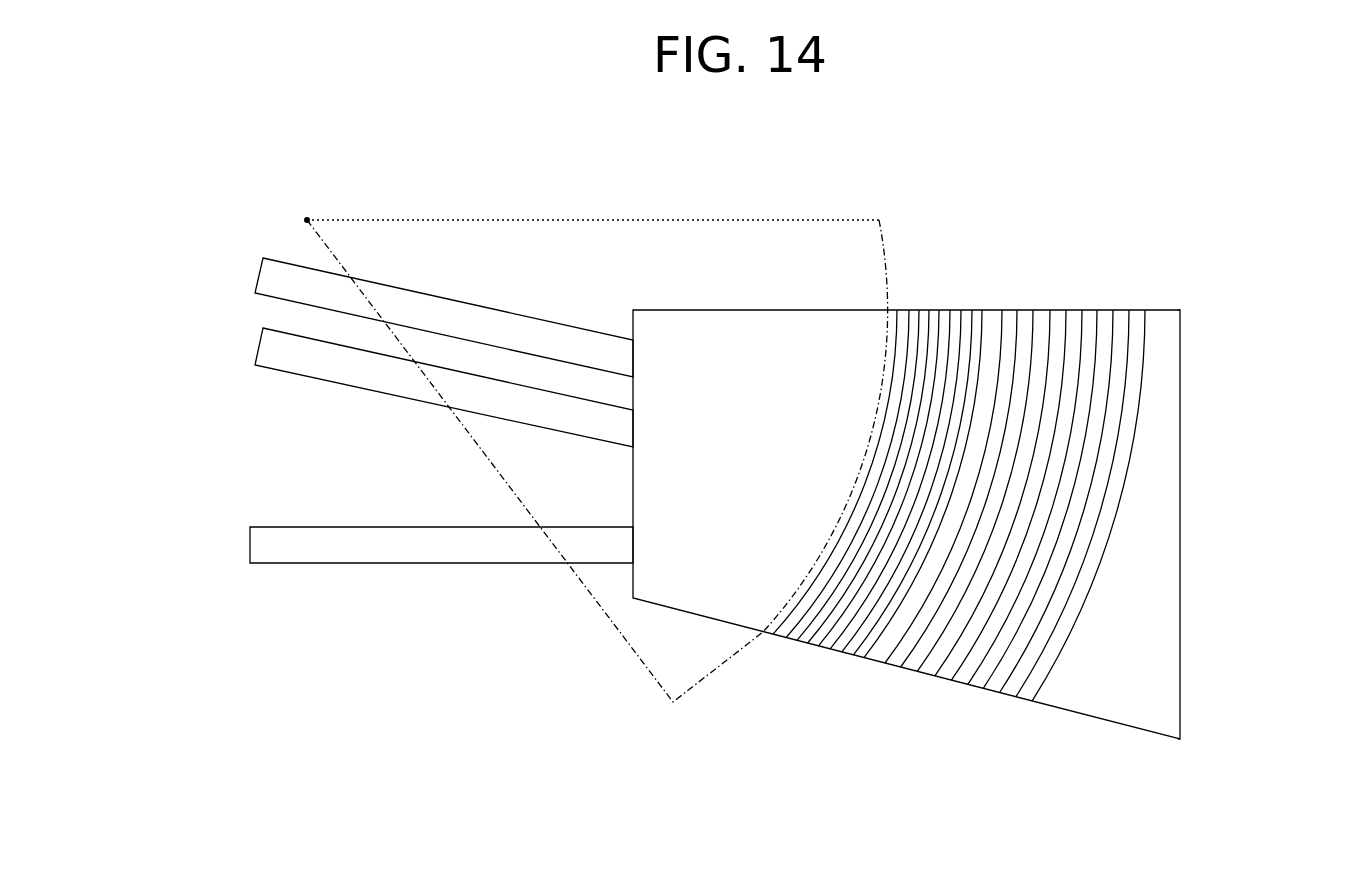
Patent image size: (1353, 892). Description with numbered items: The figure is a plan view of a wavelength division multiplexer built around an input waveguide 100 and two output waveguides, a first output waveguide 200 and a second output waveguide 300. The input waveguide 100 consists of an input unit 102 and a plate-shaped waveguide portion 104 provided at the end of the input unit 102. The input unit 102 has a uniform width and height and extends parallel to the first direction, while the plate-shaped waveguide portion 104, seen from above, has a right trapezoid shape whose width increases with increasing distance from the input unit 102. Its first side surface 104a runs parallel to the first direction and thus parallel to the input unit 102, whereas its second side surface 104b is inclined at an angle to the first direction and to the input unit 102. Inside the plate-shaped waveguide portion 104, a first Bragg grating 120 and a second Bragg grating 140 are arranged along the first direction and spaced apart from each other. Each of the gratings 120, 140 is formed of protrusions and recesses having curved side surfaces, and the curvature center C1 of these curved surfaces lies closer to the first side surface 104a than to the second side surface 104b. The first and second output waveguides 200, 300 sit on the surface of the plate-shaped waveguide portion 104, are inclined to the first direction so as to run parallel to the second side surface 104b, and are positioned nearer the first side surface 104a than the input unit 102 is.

The input waveguide 100 is at (780, 551).
The input unit 102 is at (450, 540).
The plate-shaped waveguide portion 104 is at (972, 527).
The first side surface 104a is at (1160, 310).
The second side surface 104b is at (1163, 735).
The first Bragg grating 120 is at (982, 310).
The second Bragg grating 140 is at (1145, 310).
The first output waveguide 200 is at (268, 350).
The second output waveguide 300 is at (268, 278).
The curvature center C1 is at (307, 219).